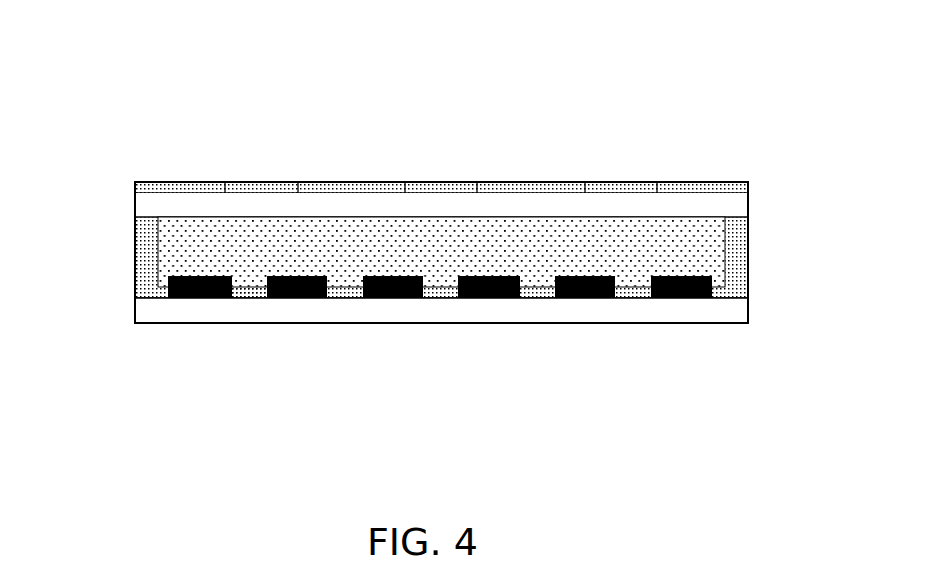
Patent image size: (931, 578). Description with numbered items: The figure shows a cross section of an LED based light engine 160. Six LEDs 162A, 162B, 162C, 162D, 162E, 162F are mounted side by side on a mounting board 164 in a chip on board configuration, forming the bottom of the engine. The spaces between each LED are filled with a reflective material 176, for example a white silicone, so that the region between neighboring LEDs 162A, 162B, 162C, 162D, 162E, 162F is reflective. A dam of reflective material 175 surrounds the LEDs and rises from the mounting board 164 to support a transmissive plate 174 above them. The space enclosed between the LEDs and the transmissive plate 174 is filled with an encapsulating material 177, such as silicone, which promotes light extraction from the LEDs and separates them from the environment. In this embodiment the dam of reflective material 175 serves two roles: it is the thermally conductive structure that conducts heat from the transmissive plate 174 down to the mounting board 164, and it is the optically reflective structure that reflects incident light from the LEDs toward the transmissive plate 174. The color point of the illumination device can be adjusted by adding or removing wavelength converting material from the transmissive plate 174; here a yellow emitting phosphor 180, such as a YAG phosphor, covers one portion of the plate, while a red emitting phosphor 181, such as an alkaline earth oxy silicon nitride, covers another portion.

The LED based light engine 160 is at (718, 77).
The LED 162A is at (206, 299).
The LED 162B is at (295, 299).
The LED 162C is at (388, 299).
The LED 162D is at (485, 299).
The LED 162E is at (582, 299).
The LED 162F is at (677, 299).
The mounting board 164 is at (153, 312).
The transmissive plate 174 is at (147, 205).
The dam of reflective material 175 is at (147, 280).
The reflective material 176 is at (253, 290).
The encapsulating material 177 is at (697, 243).
The yellow emitting phosphor 180 is at (265, 187).
The red emitting phosphor 181 is at (344, 188).